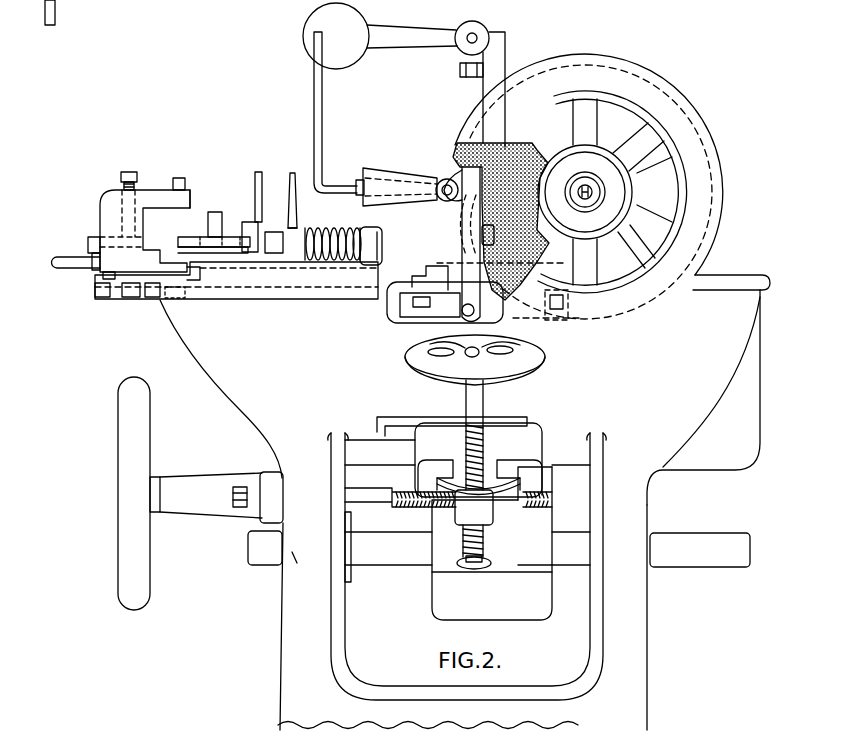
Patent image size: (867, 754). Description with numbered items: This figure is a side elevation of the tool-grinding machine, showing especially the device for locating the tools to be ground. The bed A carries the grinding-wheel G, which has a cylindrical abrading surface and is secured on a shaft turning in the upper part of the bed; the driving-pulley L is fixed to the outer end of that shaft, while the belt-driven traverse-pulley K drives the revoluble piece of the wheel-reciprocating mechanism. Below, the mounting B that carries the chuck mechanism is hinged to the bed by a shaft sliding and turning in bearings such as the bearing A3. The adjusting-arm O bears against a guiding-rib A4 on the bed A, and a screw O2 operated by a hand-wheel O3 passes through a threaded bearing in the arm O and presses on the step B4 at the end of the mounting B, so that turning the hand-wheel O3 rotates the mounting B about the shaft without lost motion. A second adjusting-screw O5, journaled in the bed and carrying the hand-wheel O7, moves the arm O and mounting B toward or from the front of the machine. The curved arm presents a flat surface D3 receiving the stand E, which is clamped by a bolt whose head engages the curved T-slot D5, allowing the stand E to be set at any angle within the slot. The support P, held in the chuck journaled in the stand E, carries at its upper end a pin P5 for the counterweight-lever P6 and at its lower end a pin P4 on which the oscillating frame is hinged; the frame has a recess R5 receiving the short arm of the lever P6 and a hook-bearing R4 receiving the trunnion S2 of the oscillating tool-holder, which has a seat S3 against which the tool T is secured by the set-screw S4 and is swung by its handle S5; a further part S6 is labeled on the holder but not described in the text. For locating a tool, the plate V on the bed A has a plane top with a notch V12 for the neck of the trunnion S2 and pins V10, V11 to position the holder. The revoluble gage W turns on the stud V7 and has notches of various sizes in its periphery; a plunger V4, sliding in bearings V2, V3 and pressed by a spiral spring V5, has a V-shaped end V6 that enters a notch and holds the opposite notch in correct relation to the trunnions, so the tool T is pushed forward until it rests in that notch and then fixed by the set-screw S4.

The bed A is at (465, 391).
The bearing A3 is at (463, 617).
The guiding-rib A4 is at (391, 435).
The mounting B is at (448, 543).
The step B4 is at (484, 547).
The flat surface D3 is at (400, 298).
The curved T-slot D5 is at (423, 297).
The stand E is at (431, 275).
The grinding-wheel G is at (455, 152).
The traverse-pulley K is at (672, 193).
The driving-pulley L is at (585, 192).
The adjusting-arm O is at (474, 508).
The screw O2 is at (462, 403).
The hand-wheel O3 is at (528, 368).
The adjusting-screw O5 is at (546, 517).
The hand-wheel O7 is at (146, 443).
The support P is at (511, 66).
The pin P4 is at (462, 311).
The pin P5 is at (478, 30).
The counterweight-lever P6 is at (356, 28).
The hook-bearing R4 is at (455, 213).
The recess R5 is at (463, 70).
The trunnion S2 is at (447, 185).
The seat S3 is at (188, 194).
The set-screw S4 is at (129, 169).
The handle S5 is at (67, 263).
The bracket lug S6 is at (158, 255).
The tool T is at (84, 234).
The plate V is at (236, 280).
The bearing V2 is at (298, 202).
The bearing V3 is at (370, 235).
The plunger V4 is at (275, 227).
The spiral spring V5 is at (337, 226).
The V-shaped end V6 is at (248, 222).
The stud V7 is at (217, 213).
The pin V10 is at (100, 278).
The pin V11 is at (128, 287).
The notch V12 is at (192, 280).
The revoluble gage W is at (205, 238).